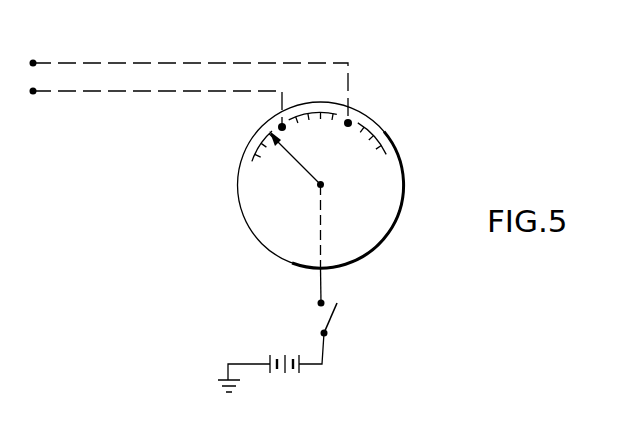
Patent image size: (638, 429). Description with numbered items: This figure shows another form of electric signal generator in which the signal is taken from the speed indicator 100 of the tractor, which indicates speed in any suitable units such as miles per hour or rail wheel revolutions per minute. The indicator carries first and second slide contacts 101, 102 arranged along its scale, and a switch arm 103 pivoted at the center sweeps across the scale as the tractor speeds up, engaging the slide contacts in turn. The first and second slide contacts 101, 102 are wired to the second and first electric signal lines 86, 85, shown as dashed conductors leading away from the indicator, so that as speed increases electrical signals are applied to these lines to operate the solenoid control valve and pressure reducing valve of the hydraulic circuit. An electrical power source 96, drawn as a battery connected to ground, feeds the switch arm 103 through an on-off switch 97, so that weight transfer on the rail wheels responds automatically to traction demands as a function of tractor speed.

The first electric signal line 85 is at (106, 63).
The second electric signal line 86 is at (115, 92).
The speed indicator 100 is at (388, 178).
The first slide contact 101 is at (312, 119).
The second slide contact 102 is at (365, 150).
The switch arm 103 is at (298, 165).
The on-off switch 97 is at (335, 318).
The electrical power source 96 is at (295, 373).